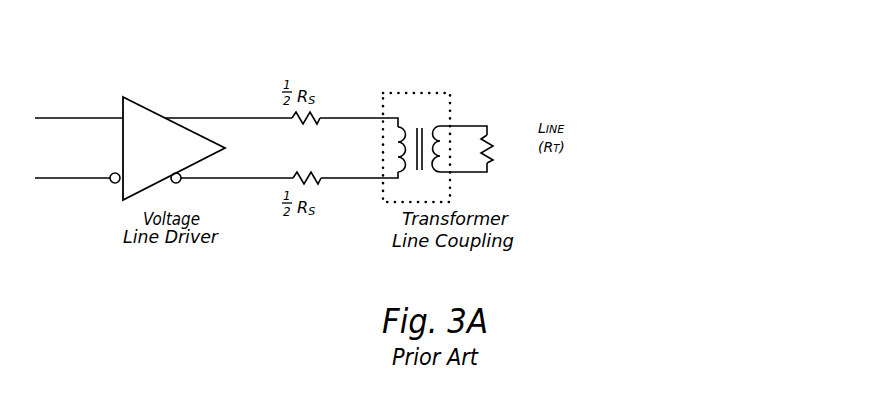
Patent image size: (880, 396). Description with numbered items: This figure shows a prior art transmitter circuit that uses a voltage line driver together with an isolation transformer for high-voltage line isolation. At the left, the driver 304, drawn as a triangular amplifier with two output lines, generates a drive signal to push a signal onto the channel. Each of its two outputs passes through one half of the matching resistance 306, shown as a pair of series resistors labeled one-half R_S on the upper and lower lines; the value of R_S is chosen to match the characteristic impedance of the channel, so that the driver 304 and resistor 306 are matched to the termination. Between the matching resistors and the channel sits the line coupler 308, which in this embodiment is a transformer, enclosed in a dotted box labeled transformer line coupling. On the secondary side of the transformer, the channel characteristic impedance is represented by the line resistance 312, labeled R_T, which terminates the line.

The driver 304 is at (167, 148).
The matching resistance 306 is at (328, 117).
The line coupler 308 is at (434, 116).
The line resistance 312 is at (510, 117).